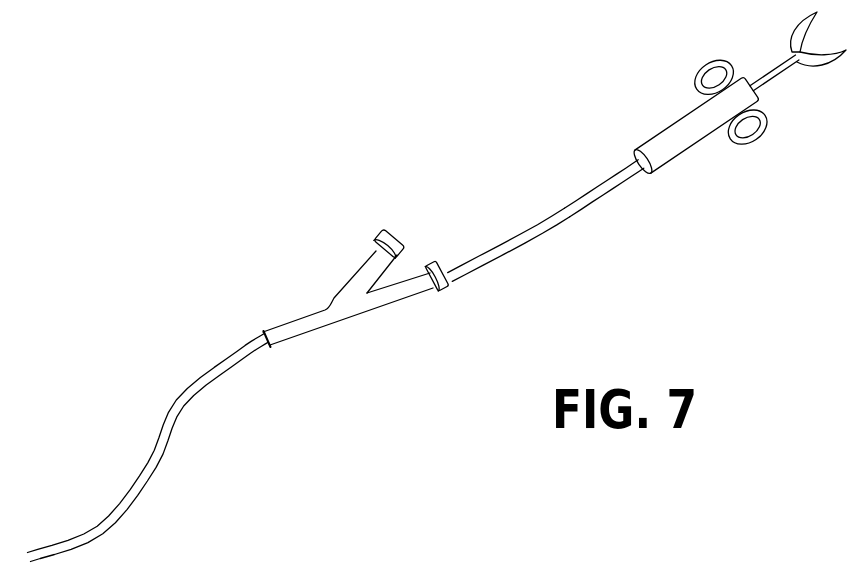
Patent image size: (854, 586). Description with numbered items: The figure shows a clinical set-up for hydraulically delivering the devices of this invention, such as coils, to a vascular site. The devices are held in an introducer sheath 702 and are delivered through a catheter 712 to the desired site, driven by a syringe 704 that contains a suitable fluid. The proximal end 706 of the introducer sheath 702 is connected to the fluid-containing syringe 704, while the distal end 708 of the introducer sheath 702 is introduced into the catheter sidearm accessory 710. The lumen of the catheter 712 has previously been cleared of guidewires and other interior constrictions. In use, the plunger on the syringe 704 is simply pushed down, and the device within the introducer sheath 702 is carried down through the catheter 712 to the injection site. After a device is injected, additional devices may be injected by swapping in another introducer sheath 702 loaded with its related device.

The introducer sheath 702 is at (553, 207).
The syringe 704 is at (665, 131).
The proximal end 706 is at (608, 186).
The distal end 708 is at (453, 283).
The catheter sidearm accessory 710 is at (438, 293).
The catheter 712 is at (264, 292).